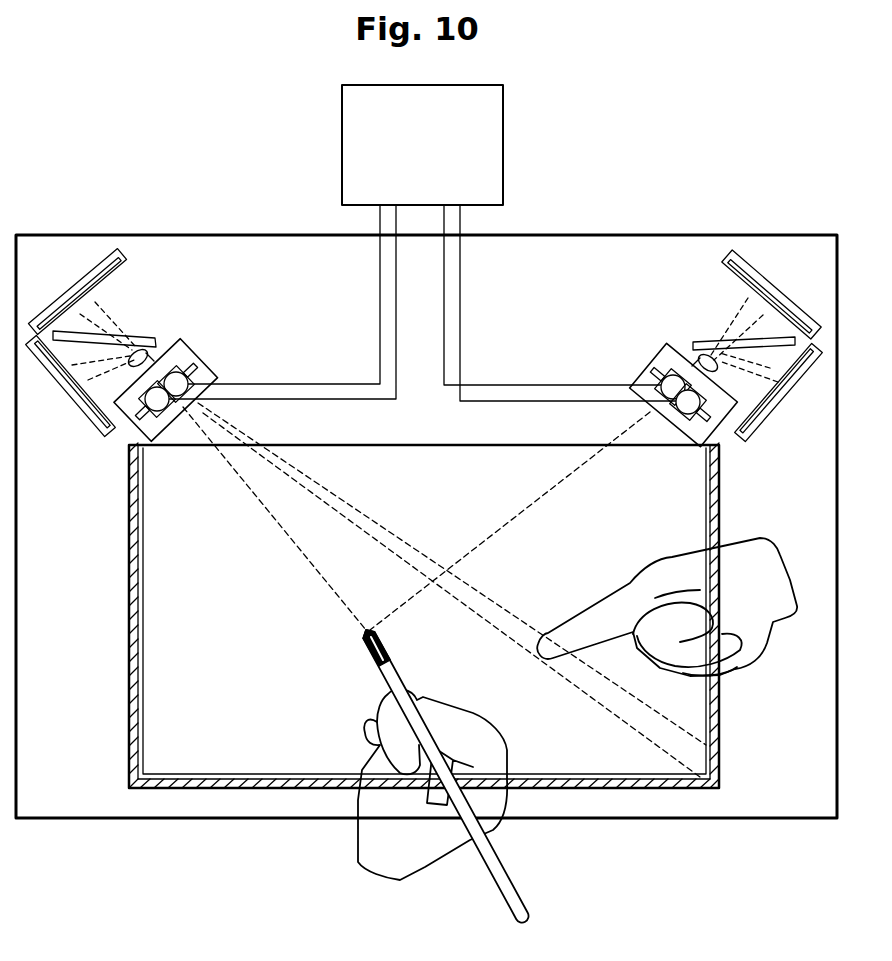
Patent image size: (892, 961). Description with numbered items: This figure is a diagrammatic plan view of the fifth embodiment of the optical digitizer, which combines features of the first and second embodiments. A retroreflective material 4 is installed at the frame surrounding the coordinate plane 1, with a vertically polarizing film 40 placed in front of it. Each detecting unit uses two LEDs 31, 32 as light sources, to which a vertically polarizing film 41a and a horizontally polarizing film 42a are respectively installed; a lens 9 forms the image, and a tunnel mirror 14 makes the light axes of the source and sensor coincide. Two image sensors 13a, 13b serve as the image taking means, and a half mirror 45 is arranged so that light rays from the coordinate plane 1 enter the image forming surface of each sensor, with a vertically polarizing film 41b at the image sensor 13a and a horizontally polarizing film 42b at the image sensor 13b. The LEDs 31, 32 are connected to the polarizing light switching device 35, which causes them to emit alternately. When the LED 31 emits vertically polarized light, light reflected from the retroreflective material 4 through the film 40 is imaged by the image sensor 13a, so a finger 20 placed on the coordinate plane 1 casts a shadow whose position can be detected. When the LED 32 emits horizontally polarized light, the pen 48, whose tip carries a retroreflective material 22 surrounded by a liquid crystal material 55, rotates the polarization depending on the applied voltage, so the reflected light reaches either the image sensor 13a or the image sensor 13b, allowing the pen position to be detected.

The coordinate plane 1 is at (157, 730).
The retroreflective material 4 is at (645, 788).
The lens 9 is at (134, 356).
The image sensor 13a is at (75, 287).
The image sensor 13b is at (73, 397).
The tunnel mirror 14 is at (205, 350).
The finger 20 is at (775, 585).
The retroreflective material 22 is at (365, 646).
The LED 31 is at (197, 376).
The LED 32 is at (150, 418).
The polarizing light switching device 35 is at (505, 167).
The vertically polarizing film 40 is at (605, 789).
The vertically polarizing film 41a is at (184, 367).
The vertically polarizing film 41b is at (121, 270).
The horizontally polarizing film 42a is at (180, 406).
The horizontally polarizing film 42b is at (95, 428).
The half mirror 45 is at (132, 338).
The pen 48 is at (500, 895).
The liquid crystal material 55 is at (390, 643).